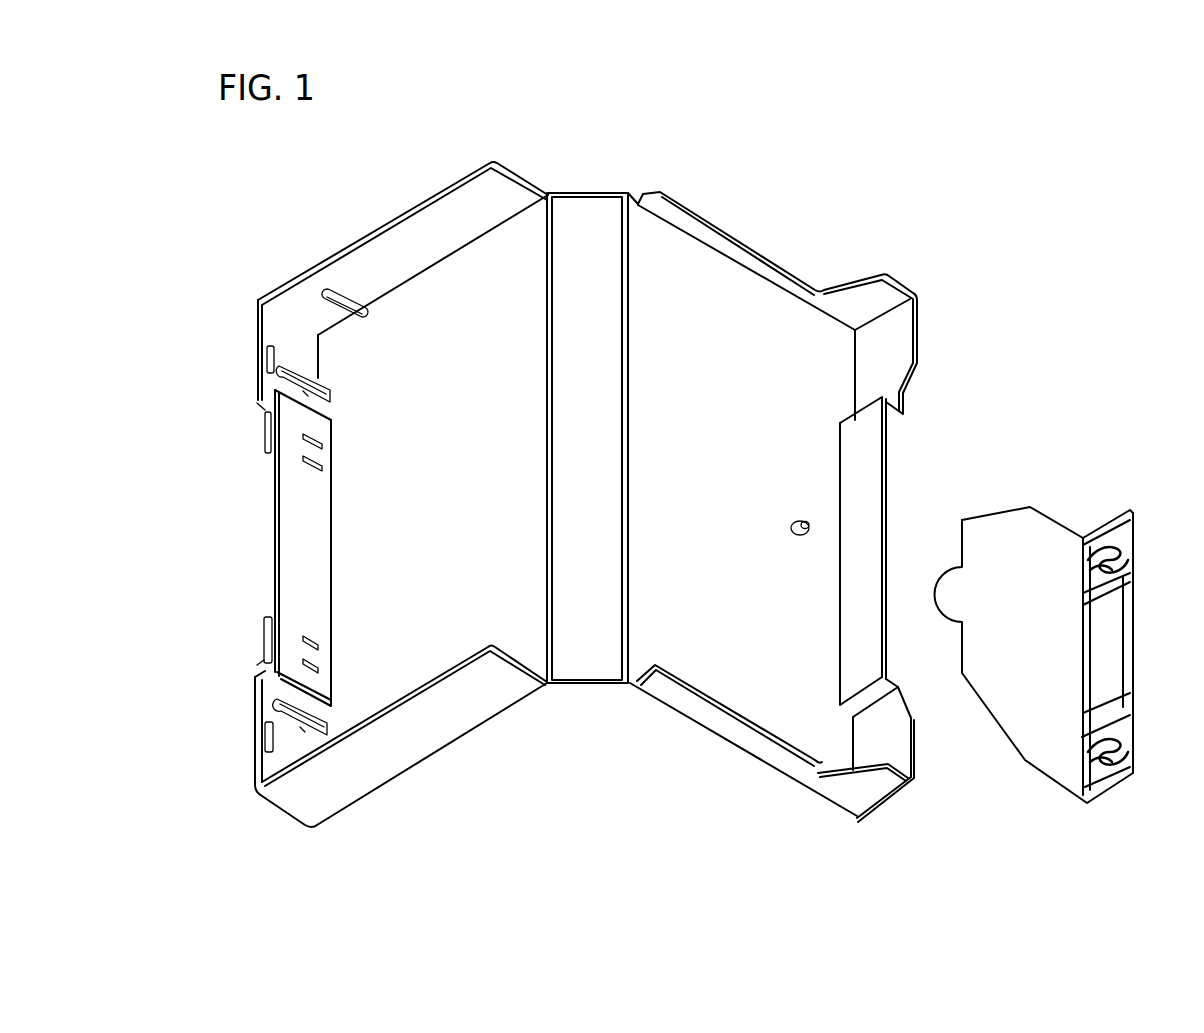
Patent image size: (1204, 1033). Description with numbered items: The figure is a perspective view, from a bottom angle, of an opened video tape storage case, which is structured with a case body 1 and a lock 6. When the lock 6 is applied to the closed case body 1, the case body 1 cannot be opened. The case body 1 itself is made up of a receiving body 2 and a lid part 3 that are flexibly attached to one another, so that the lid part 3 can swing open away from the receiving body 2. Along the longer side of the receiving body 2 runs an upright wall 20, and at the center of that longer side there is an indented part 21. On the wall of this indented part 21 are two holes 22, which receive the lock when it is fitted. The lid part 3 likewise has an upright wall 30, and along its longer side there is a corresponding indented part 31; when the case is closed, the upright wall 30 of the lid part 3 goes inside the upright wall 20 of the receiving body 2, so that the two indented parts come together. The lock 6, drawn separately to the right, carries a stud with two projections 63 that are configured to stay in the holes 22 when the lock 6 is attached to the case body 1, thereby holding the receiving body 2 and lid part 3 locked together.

The case body 1 is at (652, 120).
The receiving body 2 is at (452, 174).
The lid part 3 is at (684, 196).
The upright wall 20 is at (243, 745).
The indented part 21 is at (267, 530).
The holes 22 is at (303, 438).
The upright wall 30 is at (917, 337).
The indented part 31 is at (882, 300).
The lock 6 is at (1061, 512).
The projections 63 is at (1130, 557).